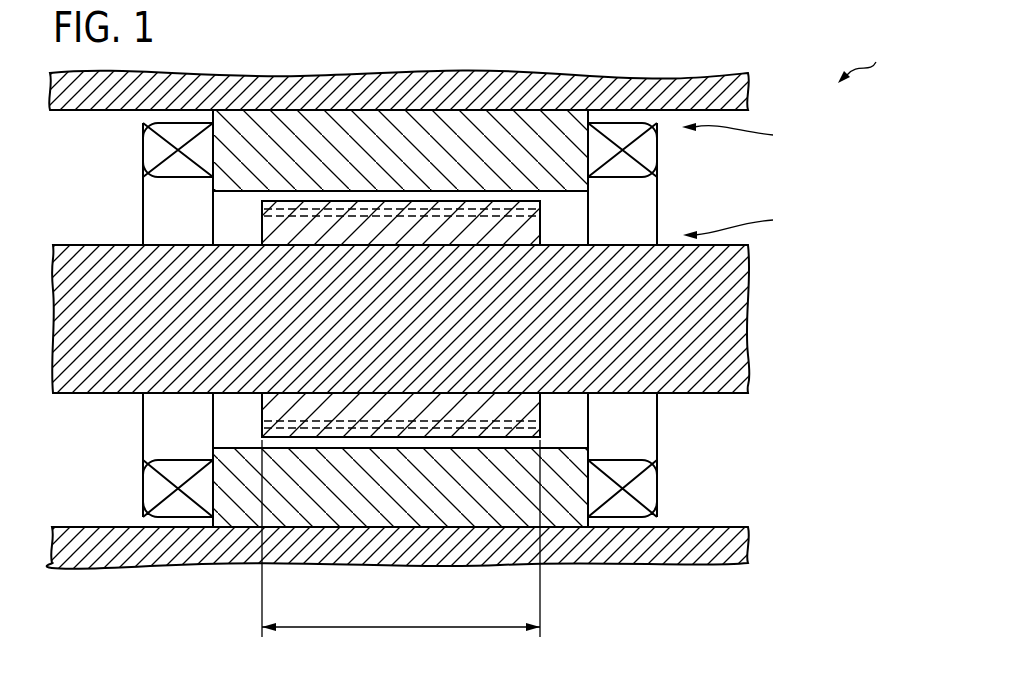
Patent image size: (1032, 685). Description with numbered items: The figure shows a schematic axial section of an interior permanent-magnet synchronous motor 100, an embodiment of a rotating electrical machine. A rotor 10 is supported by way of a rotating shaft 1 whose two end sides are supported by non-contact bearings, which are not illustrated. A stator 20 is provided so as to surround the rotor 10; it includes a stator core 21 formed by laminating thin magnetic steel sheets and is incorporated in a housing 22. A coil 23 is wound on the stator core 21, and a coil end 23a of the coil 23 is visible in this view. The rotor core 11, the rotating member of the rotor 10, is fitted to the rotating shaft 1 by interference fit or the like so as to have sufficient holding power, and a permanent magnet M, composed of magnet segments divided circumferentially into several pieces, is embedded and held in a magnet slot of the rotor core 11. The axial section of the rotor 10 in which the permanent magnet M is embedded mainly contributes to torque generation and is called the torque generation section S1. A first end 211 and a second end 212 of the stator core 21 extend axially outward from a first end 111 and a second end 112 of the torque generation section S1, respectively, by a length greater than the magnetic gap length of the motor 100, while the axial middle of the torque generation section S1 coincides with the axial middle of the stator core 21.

The rotating shaft 1 is at (735, 315).
The rotor 10 is at (744, 223).
The rotor core 11 is at (540, 222).
The first end 111 is at (262, 411).
The second end 112 is at (540, 405).
The stator 20 is at (743, 132).
The stator core 21 is at (404, 125).
The first end 211 is at (213, 449).
The second end 212 is at (588, 450).
The housing 22 is at (742, 90).
The coil 23 is at (657, 184).
The coil end 23a is at (148, 153).
The interior permanent-magnet synchronous motor 100 is at (866, 59).
The permanent magnet M is at (262, 212).
The torque generation section S1 is at (401, 538).